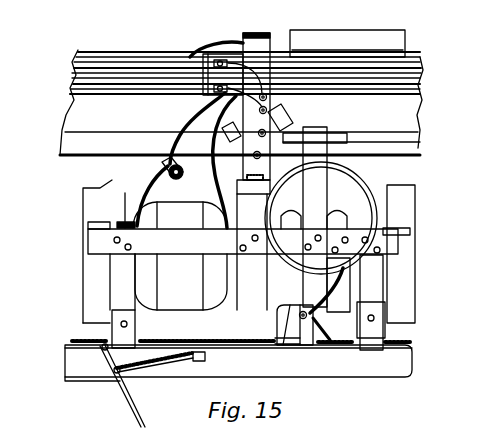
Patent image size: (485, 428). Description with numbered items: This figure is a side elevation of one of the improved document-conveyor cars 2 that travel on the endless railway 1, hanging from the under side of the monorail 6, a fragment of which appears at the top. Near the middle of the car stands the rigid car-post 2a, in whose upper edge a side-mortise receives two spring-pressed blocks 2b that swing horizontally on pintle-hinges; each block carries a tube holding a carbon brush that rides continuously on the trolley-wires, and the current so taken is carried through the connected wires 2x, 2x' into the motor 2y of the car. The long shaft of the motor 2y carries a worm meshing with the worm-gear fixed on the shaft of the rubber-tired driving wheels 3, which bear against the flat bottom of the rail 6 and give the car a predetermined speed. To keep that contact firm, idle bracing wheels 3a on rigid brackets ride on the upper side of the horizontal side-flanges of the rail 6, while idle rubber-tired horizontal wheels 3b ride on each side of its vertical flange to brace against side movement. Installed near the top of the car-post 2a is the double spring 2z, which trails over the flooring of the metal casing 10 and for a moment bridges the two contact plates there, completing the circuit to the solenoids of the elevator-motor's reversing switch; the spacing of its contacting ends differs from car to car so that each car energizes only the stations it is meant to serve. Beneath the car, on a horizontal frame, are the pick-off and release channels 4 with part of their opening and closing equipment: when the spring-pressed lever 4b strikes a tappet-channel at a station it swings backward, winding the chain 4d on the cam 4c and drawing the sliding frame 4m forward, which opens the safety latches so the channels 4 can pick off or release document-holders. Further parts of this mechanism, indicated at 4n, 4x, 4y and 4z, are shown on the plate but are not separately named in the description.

The endless railway 1 is at (420, 114).
The metal casing 10 is at (405, 34).
The document-conveyor car 2 is at (83, 246).
The car-post 2a is at (289, 122).
The spring-pressed block 2b is at (253, 60).
The connected wire 2x is at (153, 162).
The connected wire 2x' is at (152, 129).
The motor 2y is at (152, 210).
The double spring 2z is at (199, 53).
The driving wheel 3 is at (371, 198).
The idle bracing wheel 3a is at (189, 131).
The idle horizontal wheel 3b is at (351, 137).
The pick-off and release channel 4 is at (411, 372).
The spring-pressed lever 4b is at (344, 270).
The cam 4c is at (290, 305).
The chain 4d is at (222, 340).
The sliding frame 4m is at (395, 340).
The spring 4n is at (82, 337).
The rod 4x is at (121, 391).
The base foot 4y is at (75, 378).
The link rod 4z is at (152, 369).
The rail 6 is at (421, 158).